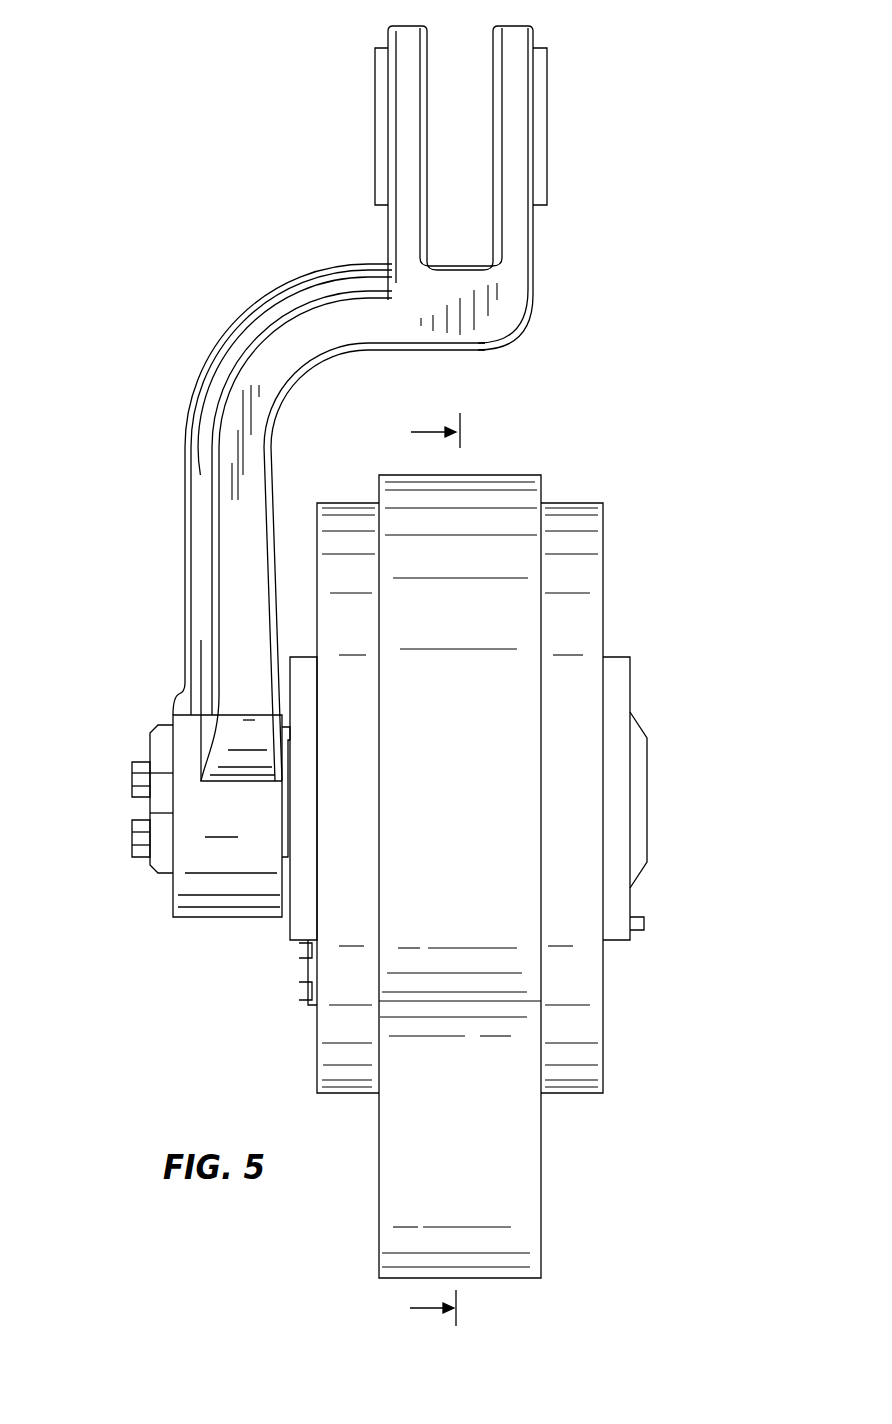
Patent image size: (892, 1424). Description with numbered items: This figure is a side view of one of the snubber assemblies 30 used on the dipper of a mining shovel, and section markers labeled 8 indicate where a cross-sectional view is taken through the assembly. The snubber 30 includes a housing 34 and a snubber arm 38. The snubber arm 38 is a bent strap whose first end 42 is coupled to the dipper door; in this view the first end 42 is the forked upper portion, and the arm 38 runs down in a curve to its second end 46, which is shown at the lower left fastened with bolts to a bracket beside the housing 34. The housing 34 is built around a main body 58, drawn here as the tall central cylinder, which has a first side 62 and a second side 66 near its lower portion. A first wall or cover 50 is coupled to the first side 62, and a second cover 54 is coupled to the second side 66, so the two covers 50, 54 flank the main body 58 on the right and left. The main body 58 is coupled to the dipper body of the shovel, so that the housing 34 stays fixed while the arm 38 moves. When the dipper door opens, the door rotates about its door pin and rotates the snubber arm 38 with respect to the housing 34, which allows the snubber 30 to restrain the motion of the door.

The snubber assembly 30 is at (708, 296).
The housing 34 is at (559, 449).
The snubber arm 38 is at (279, 291).
The first end 42 is at (380, 127).
The second end 46 is at (190, 887).
The first wall or cover 50 is at (593, 577).
The second cover 54 is at (353, 525).
The main body 58 is at (495, 803).
The first side 62 is at (542, 1173).
The second side 66 is at (378, 1190).
The section line 8 is at (426, 869).